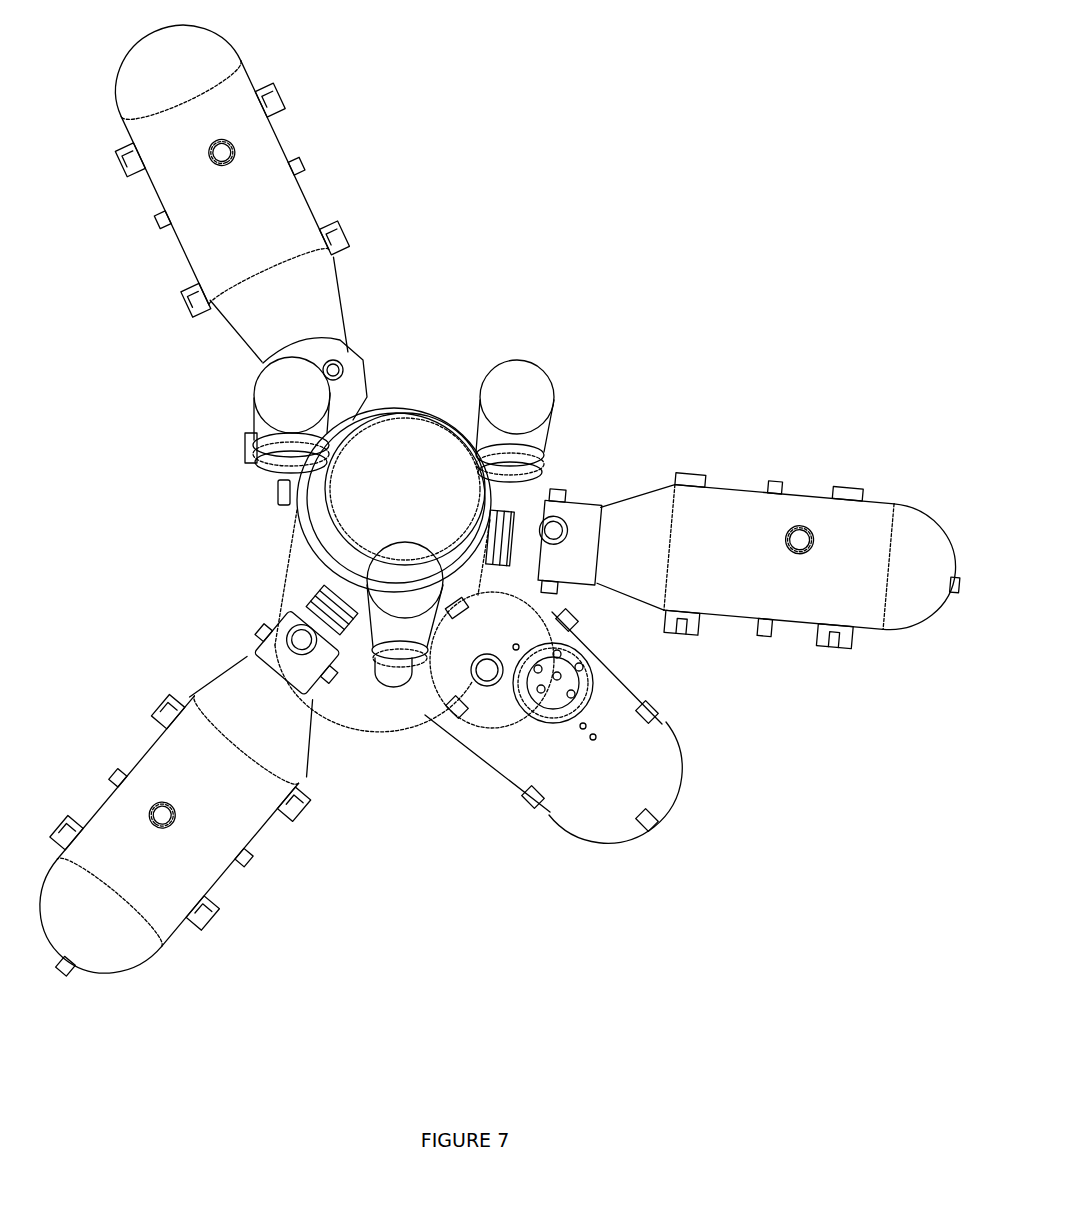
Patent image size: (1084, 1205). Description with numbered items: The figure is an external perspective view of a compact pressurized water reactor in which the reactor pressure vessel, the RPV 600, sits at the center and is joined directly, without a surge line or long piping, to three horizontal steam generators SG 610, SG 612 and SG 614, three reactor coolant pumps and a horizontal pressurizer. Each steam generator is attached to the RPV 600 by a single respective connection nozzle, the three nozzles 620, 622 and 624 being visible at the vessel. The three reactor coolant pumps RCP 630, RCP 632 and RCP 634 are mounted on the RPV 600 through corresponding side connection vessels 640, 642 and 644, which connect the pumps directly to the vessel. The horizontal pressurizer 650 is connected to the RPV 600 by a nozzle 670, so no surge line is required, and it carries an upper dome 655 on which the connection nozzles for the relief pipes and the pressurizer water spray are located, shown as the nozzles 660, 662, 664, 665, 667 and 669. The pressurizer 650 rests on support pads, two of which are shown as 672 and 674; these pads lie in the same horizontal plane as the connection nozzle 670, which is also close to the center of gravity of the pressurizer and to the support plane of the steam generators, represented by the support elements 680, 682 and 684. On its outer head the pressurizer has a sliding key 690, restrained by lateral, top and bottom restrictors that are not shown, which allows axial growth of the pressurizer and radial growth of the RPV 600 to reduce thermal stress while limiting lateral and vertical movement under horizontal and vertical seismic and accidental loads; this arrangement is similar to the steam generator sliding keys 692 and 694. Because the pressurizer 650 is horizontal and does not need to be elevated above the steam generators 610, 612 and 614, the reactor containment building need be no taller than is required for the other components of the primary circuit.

The RPV 600 is at (423, 552).
The horizontal SG 610 is at (198, 801).
The horizontal SG 612 is at (724, 560).
The horizontal SG 614 is at (232, 202).
The connection nozzle 620 is at (323, 604).
The connection nozzle 622 is at (507, 531).
The connection nozzle 624 is at (345, 418).
The RCP 630 is at (308, 647).
The RCP 632 is at (582, 421).
The RCP 634 is at (254, 415).
The side connection vessel 640 is at (390, 677).
The side connection vessel 642 is at (540, 456).
The side connection vessel 644 is at (250, 453).
The horizontal pressurizer 650 is at (594, 752).
The upper dome 655 is at (527, 704).
The nozzle 660 is at (580, 668).
The nozzle 662 is at (557, 653).
The nozzle 664 is at (537, 673).
The nozzle 665 is at (543, 687).
The nozzle 667 is at (557, 677).
The nozzle 669 is at (570, 694).
The nozzle 670 is at (457, 608).
The support pad 672 is at (537, 800).
The support pad 674 is at (648, 712).
The GV support plane 680 is at (205, 898).
The GV support plane 682 is at (205, 307).
The GV support plane 684 is at (282, 492).
The sliding key in the outer head 690 is at (647, 822).
The SG sliding key 692 is at (72, 965).
The SG sliding key 694 is at (953, 588).